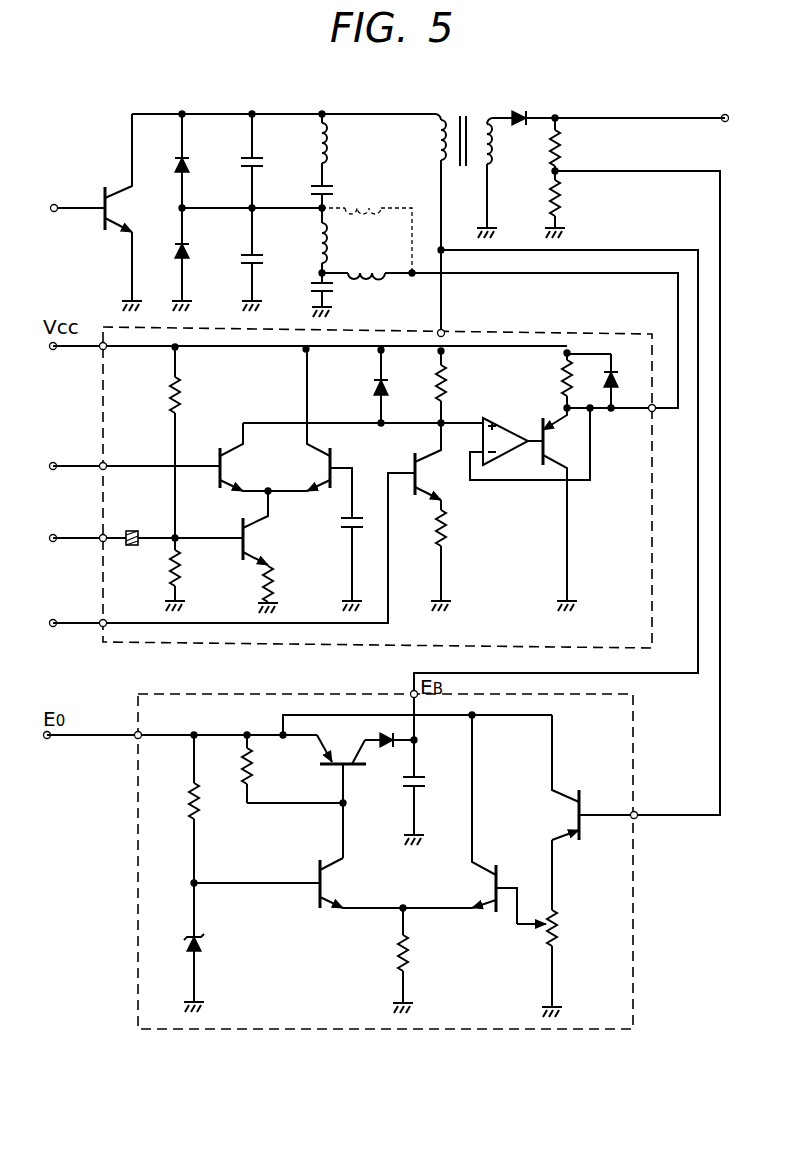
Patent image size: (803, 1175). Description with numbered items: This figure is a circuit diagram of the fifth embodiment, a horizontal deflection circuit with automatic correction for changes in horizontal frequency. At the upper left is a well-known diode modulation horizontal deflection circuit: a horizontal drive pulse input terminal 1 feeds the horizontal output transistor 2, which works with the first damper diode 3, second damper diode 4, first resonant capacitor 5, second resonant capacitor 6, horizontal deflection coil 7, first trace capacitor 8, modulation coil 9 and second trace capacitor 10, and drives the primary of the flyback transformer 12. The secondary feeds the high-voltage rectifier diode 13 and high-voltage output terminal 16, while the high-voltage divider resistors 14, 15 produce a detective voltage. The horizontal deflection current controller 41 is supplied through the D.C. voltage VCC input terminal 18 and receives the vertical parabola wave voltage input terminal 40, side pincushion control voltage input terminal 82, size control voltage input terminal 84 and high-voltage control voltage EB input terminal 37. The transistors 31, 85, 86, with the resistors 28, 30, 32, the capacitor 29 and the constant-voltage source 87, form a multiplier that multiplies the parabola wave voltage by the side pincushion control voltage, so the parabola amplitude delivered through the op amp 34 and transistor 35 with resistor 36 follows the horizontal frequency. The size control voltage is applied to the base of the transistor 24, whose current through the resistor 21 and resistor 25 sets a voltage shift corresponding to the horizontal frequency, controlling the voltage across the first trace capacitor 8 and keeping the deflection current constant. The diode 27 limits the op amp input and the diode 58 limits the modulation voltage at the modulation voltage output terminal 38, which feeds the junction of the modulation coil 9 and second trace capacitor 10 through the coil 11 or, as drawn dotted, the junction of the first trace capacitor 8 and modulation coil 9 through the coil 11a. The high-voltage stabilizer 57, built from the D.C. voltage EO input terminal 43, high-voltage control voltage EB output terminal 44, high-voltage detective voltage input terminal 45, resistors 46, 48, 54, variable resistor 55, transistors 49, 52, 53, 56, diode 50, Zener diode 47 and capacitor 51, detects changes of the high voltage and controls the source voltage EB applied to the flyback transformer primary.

The horizontal drive pulse input terminal 1 is at (55, 212).
The horizontal output transistor 2 is at (118, 235).
The first damper diode 3 is at (172, 168).
The second damper diode 4 is at (172, 262).
The first resonant capacitor 5 is at (244, 163).
The second resonant capacitor 6 is at (246, 267).
The horizontal deflection coil 7 is at (330, 142).
The first trace capacitor 8 is at (312, 190).
The modulation coil 9 is at (327, 232).
The second trace capacitor 10 is at (327, 292).
The coil 11 is at (383, 278).
The coil 11a is at (392, 206).
The flyback transformer 12 is at (460, 110).
The high-voltage rectifier diode 13 is at (516, 110).
The high-voltage divider resistor 14 is at (561, 147).
The high-voltage divider resistor 15 is at (561, 199).
The high-voltage output terminal 16 is at (725, 114).
The D.C. voltage VCC input terminal 18 is at (102, 351).
The resistor 21 is at (443, 384).
The transistor 24 is at (431, 487).
The resistor 25 is at (444, 537).
The diode 27 is at (374, 384).
The resistor 28 is at (177, 387).
The capacitor 29 is at (132, 531).
The resistor 30 is at (178, 575).
The transistor 31 is at (268, 541).
The resistor 32 is at (271, 569).
The op amp 34 is at (502, 428).
The transistor 35 is at (560, 445).
The resistor 36 is at (562, 376).
The high-voltage control voltage EB input terminal 37 is at (445, 332).
The modulation voltage output terminal 38 is at (655, 412).
The vertical parabola wave voltage input terminal 40 is at (102, 544).
The horizontal deflection current controller 41 is at (190, 646).
The D.C. voltage EO input terminal 43 is at (136, 739).
The high-voltage control voltage EB output terminal 44 is at (410, 694).
The high-voltage detective voltage input terminal 45 is at (638, 813).
The resistor 46 is at (187, 800).
The Zener diode 47 is at (204, 942).
The resistor 48 is at (240, 782).
The transistor 49 is at (354, 767).
The diode 50 is at (378, 736).
The capacitor 51 is at (420, 781).
The transistor 52 is at (344, 885).
The transistor 53 is at (486, 890).
The resistor 54 is at (411, 950).
The variable resistor 55 is at (562, 923).
The transistor 56 is at (564, 814).
The high-voltage stabilizer 57 is at (136, 911).
The diode 58 is at (619, 386).
The side pincushion control voltage input terminal 82 is at (102, 471).
The size control voltage input terminal 84 is at (102, 629).
The transistor 85 is at (240, 472).
The transistor 86 is at (332, 457).
The constant-voltage source 87 is at (352, 520).